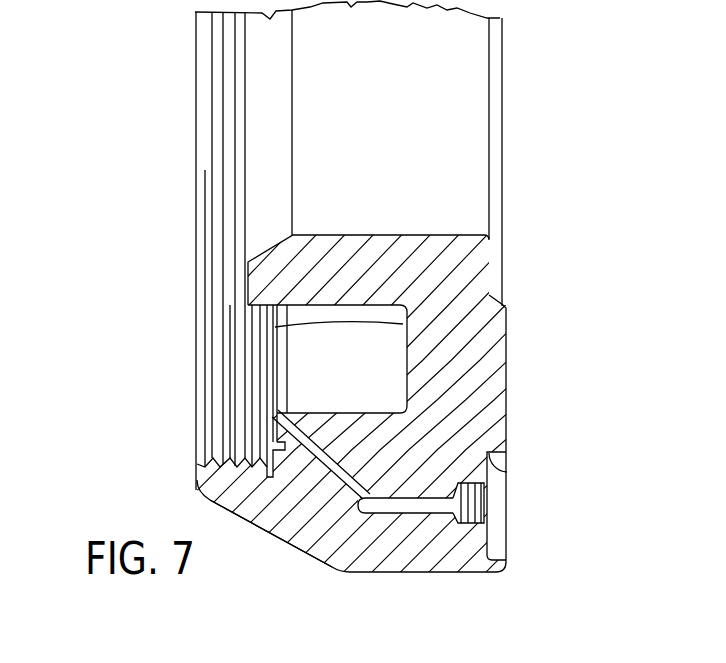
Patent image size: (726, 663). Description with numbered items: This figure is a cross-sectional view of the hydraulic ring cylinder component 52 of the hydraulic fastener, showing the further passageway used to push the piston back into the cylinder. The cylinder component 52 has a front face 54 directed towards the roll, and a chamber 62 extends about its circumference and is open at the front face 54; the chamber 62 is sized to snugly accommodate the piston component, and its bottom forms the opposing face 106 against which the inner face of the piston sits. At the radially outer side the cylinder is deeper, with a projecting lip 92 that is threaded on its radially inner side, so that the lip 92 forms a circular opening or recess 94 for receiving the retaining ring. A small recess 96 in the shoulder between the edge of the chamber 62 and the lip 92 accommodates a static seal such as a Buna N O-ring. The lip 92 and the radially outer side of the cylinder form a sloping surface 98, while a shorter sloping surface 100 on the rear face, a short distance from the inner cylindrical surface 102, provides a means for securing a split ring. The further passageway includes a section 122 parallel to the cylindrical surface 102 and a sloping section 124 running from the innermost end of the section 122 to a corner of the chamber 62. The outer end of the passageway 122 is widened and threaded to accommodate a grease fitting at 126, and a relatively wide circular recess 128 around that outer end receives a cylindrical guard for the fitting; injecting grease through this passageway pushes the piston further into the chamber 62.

The hydraulic ring cylinder component 52 is at (154, 214).
The front face 54 is at (243, 280).
The chamber 62 is at (357, 366).
The projecting lip 92 is at (216, 486).
The circular opening or recess 94 is at (197, 443).
The small recess 96 is at (197, 412).
The sloping surface 98 is at (268, 536).
The sloping surface 100 is at (505, 296).
The inner cylindrical surface 102 is at (418, 235).
The opposing face of the chamber 106 is at (275, 327).
The passageway section 122 is at (422, 513).
The sloping section 124 is at (333, 482).
The grease fitting location 126 is at (464, 486).
The circular recess 128 is at (508, 473).